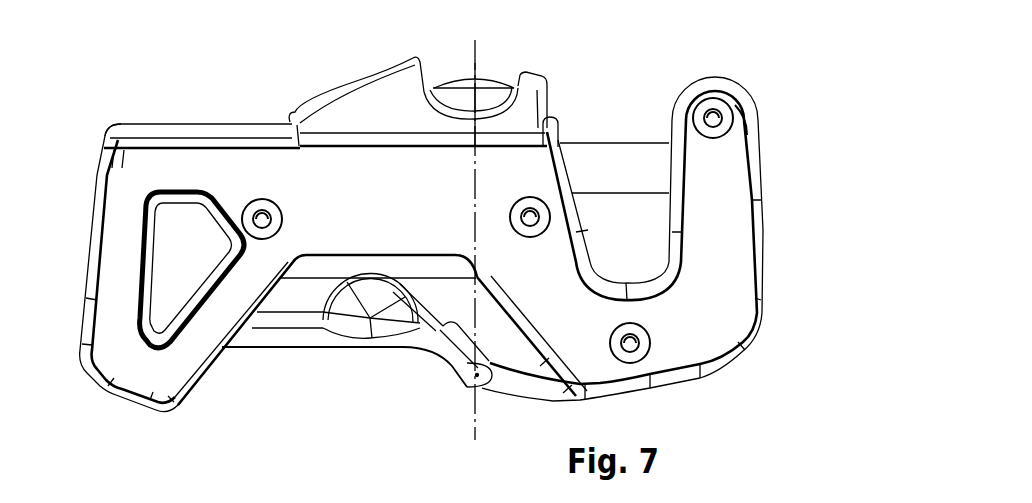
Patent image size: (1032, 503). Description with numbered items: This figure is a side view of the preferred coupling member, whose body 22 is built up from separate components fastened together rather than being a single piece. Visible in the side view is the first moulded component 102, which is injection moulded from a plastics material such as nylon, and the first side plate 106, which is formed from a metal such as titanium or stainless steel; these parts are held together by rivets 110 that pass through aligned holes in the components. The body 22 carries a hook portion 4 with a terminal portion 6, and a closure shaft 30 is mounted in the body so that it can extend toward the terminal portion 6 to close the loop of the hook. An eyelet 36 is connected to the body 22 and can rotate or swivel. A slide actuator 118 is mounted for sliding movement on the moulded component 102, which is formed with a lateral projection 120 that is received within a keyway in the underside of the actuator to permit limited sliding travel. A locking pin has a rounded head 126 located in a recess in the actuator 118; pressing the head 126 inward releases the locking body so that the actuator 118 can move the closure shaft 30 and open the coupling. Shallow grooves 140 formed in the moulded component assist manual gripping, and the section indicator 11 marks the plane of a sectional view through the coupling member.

The hook portion 4 is at (707, 313).
The terminal portion 6 is at (746, 118).
The section line 11 is at (475, 40).
The body 22 is at (140, 170).
The closure shaft 30 is at (620, 167).
The eyelet 36 is at (153, 318).
The first moulded component 102 is at (265, 347).
The first side plate 106 is at (112, 340).
The rivets 110 is at (262, 219).
The slide actuator 118 is at (350, 78).
The lateral projection 120 is at (118, 121).
The rounded head 126 is at (485, 72).
The shallow grooves 140 is at (410, 323).